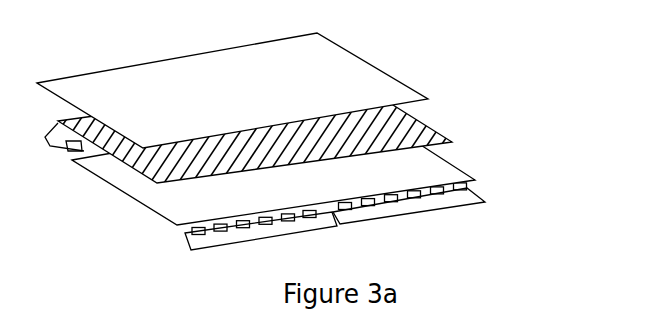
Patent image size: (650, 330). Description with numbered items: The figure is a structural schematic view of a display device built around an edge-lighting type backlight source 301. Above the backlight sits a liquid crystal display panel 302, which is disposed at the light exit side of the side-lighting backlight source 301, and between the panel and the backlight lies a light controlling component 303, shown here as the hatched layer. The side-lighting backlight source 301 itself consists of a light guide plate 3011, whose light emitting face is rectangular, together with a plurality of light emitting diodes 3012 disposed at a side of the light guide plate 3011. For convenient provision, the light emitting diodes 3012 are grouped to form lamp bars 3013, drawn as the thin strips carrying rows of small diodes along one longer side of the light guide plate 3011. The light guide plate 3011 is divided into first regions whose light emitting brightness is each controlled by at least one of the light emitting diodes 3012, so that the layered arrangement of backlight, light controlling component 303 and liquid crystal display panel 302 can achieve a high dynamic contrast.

The edge-lighting type backlight source 301 is at (353, 179).
The liquid crystal display panel 302 is at (377, 66).
The light controlling component 303 is at (430, 124).
The light guide plate 3011 is at (457, 163).
The light emitting diodes 3012 is at (465, 188).
The lamp bars 3013 is at (410, 215).